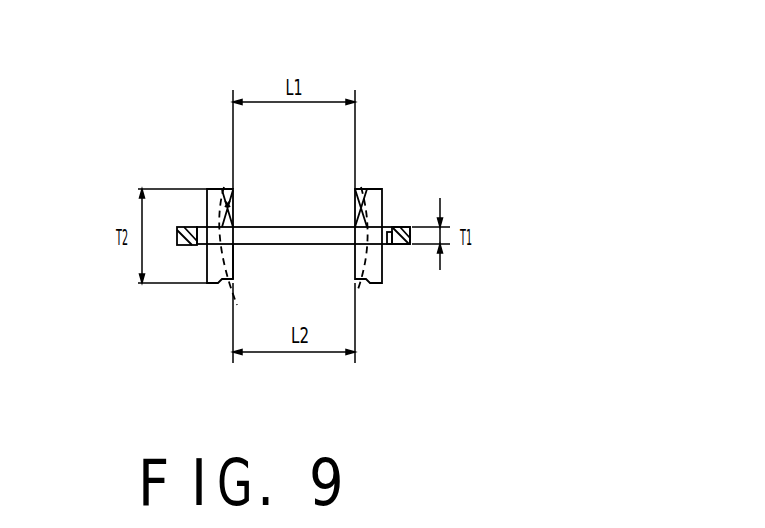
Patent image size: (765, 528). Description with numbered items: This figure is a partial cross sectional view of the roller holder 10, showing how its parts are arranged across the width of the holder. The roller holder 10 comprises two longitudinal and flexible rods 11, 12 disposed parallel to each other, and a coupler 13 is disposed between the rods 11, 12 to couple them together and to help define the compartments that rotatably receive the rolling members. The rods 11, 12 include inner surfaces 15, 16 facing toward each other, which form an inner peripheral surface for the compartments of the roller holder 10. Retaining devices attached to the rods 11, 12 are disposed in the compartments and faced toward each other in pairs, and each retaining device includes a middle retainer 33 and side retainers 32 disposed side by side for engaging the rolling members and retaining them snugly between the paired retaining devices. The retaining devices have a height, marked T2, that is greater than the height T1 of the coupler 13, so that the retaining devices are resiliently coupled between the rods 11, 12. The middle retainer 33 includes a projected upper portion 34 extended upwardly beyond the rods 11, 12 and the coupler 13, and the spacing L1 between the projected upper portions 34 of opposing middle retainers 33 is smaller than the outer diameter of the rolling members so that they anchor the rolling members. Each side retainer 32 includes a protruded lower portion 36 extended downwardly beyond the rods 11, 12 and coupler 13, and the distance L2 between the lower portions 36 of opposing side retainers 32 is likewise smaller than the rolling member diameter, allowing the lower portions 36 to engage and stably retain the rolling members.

The roller holder 10 is at (491, 124).
The rod 11 is at (182, 227).
The rod 12 is at (399, 226).
The coupler 13 is at (330, 237).
The inner surface 15 is at (200, 247).
The inner surface 16 is at (388, 245).
The side retainer 32 is at (246, 265).
The middle retainer 33 is at (239, 207).
The projected upper portion 34 is at (232, 193).
The protruded lower portion 36 is at (235, 270).